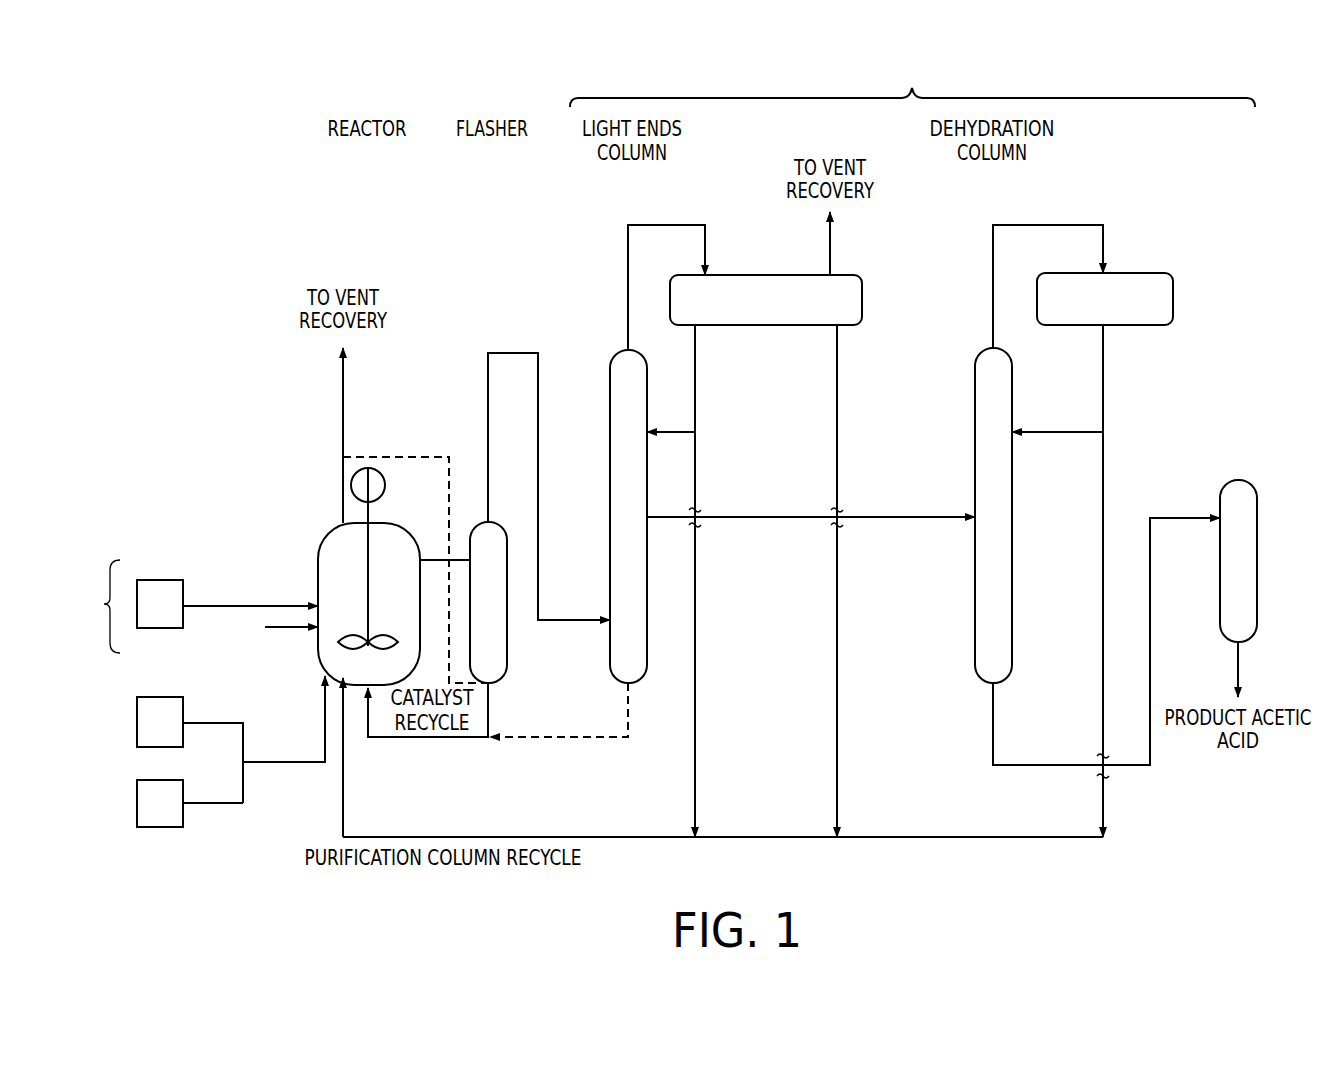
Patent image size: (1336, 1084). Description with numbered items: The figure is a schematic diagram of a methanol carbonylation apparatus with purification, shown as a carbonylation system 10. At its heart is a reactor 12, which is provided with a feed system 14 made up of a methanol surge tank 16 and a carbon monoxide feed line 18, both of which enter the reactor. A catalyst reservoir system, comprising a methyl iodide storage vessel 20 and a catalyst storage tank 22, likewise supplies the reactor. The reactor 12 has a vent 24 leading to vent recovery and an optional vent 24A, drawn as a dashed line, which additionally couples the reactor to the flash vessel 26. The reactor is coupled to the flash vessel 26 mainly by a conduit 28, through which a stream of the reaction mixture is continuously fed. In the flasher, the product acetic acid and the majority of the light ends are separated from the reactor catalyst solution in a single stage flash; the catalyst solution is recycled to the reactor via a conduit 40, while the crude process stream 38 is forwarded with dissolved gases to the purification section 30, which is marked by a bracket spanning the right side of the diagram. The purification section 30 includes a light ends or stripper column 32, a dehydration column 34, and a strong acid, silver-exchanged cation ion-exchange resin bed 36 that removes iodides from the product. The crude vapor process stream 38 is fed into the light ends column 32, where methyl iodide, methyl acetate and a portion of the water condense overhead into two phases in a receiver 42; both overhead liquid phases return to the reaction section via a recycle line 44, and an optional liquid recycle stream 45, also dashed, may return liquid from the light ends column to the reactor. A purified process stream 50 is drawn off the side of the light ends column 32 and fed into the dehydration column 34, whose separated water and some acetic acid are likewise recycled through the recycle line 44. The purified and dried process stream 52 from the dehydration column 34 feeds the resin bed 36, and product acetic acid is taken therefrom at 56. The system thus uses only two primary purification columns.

The carbonylation system 10 is at (342, 249).
The reactor 12 is at (318, 570).
The feed system 14 is at (93, 606).
The methanol surge tank 16 is at (158, 580).
The carbon monoxide feed line 18 is at (283, 627).
The methyl iodide storage vessel 20 is at (231, 739).
The catalyst storage tank 22 is at (190, 803).
The vent 24 is at (343, 413).
The optional vent 24A is at (443, 457).
The flash vessel 26 is at (507, 660).
The conduit 28 is at (425, 560).
The purification section 30 is at (912, 81).
The light ends or stripper column 32 is at (610, 378).
The dehydration column 34 is at (1005, 497).
The silver-exchanged cation ion-exchange resin bed 36 is at (1245, 538).
The crude process stream 38 is at (507, 353).
The conduit 40 is at (400, 737).
The receiver 42 is at (862, 300).
The recycle line 44 is at (637, 837).
The liquid recycle stream 45 is at (573, 737).
The purified process stream 50 is at (670, 517).
The purified and dried process stream 52 is at (1018, 765).
The product 56 is at (1238, 667).